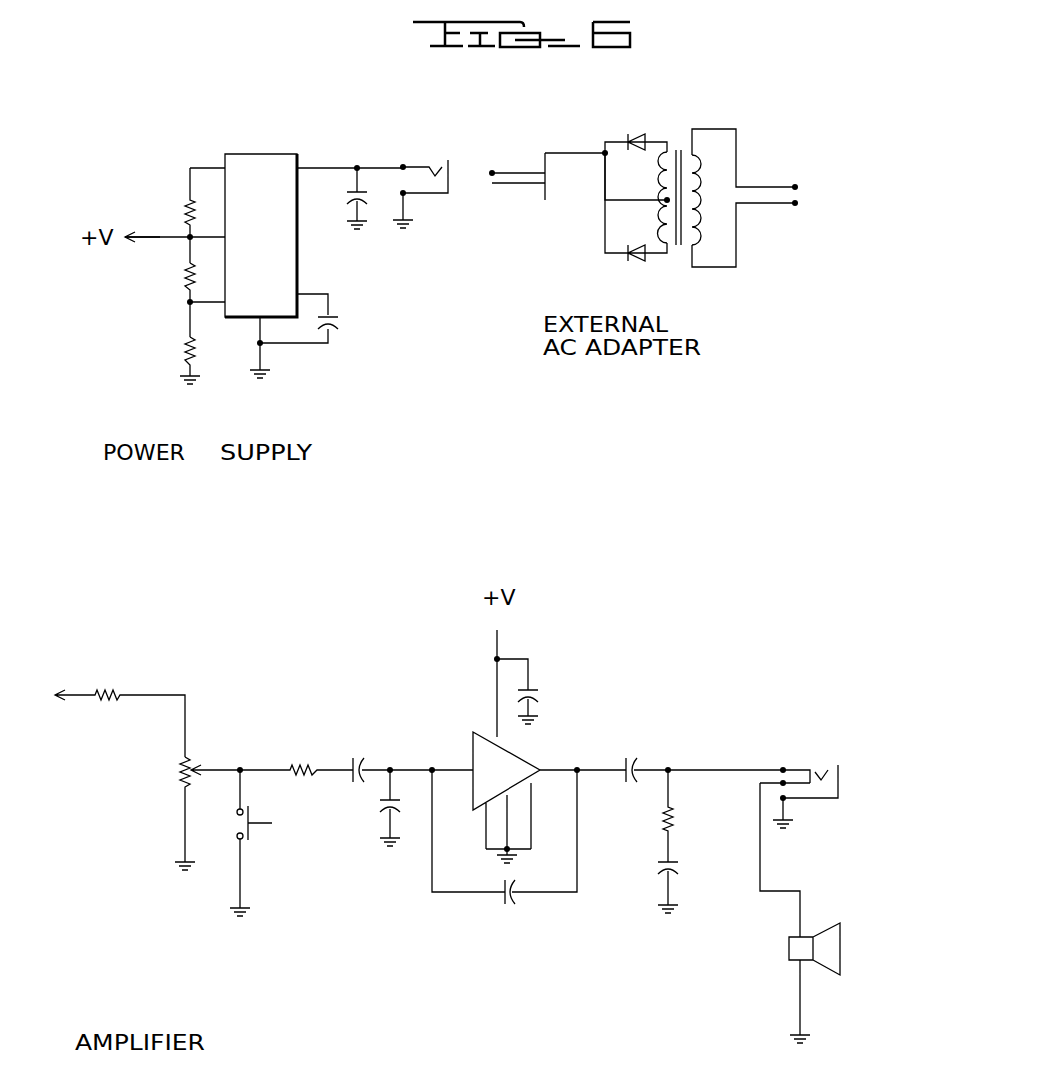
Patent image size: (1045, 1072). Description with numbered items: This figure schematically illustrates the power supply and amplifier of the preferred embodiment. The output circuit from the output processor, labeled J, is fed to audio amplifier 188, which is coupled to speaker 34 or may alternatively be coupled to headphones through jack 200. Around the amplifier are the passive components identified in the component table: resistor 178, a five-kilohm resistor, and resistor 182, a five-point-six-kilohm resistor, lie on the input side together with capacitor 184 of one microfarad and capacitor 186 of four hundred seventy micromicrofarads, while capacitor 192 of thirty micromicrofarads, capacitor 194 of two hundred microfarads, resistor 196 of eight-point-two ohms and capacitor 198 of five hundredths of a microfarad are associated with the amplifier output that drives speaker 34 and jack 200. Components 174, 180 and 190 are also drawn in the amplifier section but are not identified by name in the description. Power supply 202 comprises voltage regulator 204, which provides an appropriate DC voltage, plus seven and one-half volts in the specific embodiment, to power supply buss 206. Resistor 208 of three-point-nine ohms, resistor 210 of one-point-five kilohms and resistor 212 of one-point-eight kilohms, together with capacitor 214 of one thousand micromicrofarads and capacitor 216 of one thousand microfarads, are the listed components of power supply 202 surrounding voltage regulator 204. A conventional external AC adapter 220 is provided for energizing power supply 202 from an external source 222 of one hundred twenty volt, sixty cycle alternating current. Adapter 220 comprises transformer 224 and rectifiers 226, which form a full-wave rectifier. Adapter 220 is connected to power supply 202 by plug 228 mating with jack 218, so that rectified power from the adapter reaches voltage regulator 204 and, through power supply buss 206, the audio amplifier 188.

The speaker 34 is at (884, 1003).
The resistor 174 is at (107, 688).
The resistor 178 is at (173, 776).
The mute switch 180 is at (233, 818).
The resistor 182 is at (298, 762).
The capacitor 184 is at (356, 756).
The capacitor 186 is at (368, 815).
The audio amplifier 188 is at (509, 784).
The capacitor 190 is at (535, 690).
The capacitor 192 is at (505, 900).
The capacitor 194 is at (630, 756).
The resistor 196 is at (678, 822).
The capacitor 198 is at (655, 866).
The jack 200 is at (789, 760).
The power supply 202 is at (395, 387).
The voltage regulator 204 is at (283, 232).
The power supply buss 206 is at (158, 235).
The resistor 208 is at (188, 200).
The resistor 210 is at (183, 272).
The resistor 212 is at (184, 348).
The capacitor 214 is at (338, 320).
The capacitor 216 is at (350, 192).
The jack 218 is at (418, 160).
The external AC adapter 220 is at (738, 300).
The external source 222 is at (800, 183).
The transformer 224 is at (678, 145).
The rectifiers 226 is at (638, 136).
The plug 228 is at (497, 167).